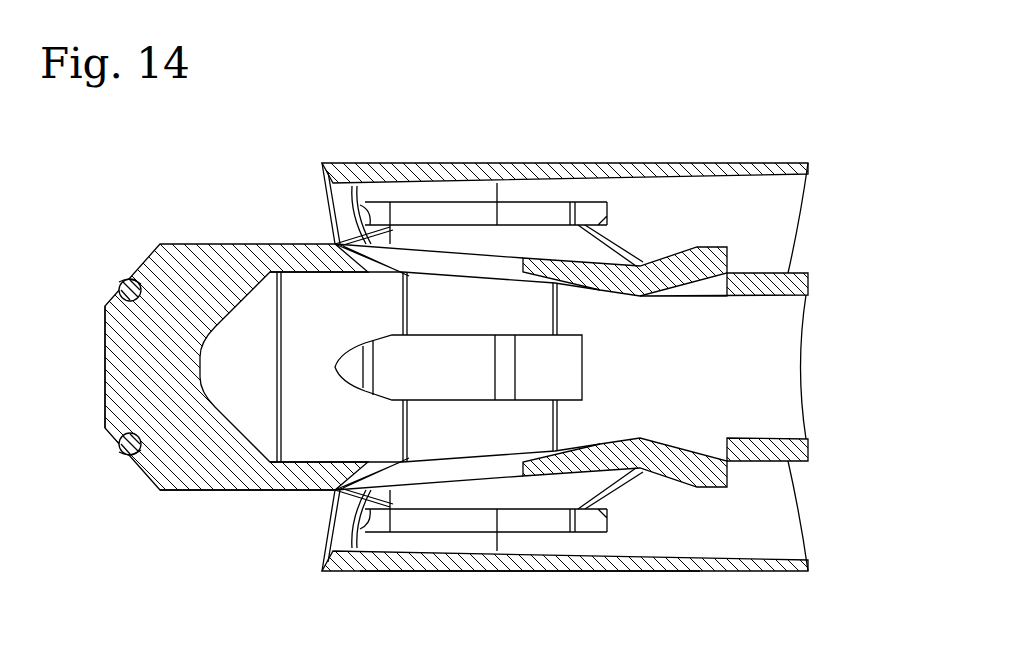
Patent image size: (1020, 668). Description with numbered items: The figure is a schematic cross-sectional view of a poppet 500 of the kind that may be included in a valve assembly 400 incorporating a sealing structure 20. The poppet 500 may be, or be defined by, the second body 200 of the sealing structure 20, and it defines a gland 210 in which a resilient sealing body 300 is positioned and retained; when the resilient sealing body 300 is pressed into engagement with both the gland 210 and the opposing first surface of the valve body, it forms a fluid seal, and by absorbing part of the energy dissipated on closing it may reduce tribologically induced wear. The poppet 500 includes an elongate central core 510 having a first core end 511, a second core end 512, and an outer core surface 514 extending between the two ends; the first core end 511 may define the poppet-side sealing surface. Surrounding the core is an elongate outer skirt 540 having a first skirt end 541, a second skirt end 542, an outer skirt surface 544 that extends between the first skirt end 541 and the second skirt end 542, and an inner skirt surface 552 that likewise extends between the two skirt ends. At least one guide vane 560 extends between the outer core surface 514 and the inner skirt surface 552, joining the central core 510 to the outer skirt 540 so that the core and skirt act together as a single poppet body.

The valve assembly 400 is at (121, 120).
The sealing structure 20 is at (144, 158).
The poppet 500 is at (480, 120).
The second body 200 is at (520, 163).
The elongate central core 510 is at (237, 236).
The first core end 511 is at (104, 372).
The second core end 512 is at (810, 448).
The outer core surface 514 is at (236, 492).
The gland 210 is at (128, 280).
The resilient sealing body 300 is at (123, 283).
The elongate outer skirt 540 is at (602, 580).
The first skirt end 541 is at (322, 568).
The second skirt end 542 is at (810, 568).
The outer skirt surface 544 is at (440, 573).
The inner skirt surface 552 is at (767, 182).
The guide vane 560 is at (633, 247).